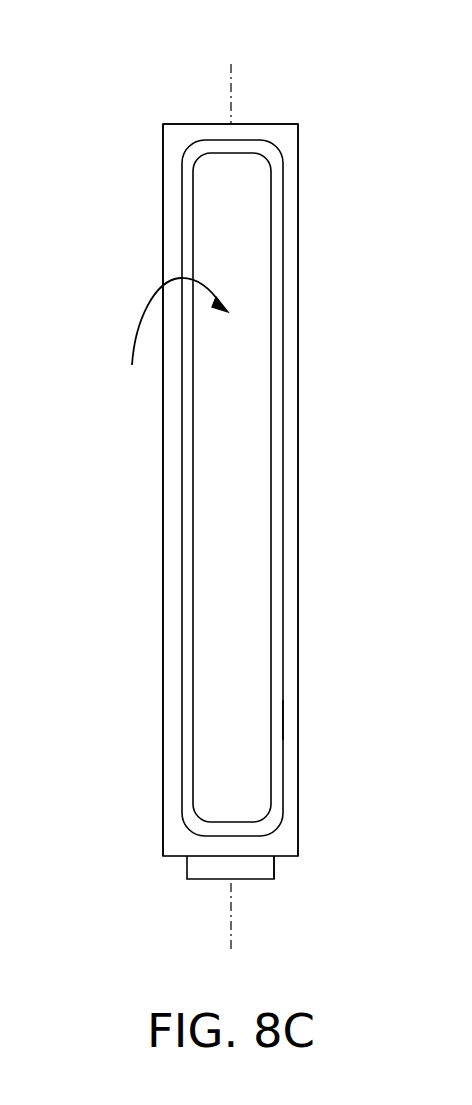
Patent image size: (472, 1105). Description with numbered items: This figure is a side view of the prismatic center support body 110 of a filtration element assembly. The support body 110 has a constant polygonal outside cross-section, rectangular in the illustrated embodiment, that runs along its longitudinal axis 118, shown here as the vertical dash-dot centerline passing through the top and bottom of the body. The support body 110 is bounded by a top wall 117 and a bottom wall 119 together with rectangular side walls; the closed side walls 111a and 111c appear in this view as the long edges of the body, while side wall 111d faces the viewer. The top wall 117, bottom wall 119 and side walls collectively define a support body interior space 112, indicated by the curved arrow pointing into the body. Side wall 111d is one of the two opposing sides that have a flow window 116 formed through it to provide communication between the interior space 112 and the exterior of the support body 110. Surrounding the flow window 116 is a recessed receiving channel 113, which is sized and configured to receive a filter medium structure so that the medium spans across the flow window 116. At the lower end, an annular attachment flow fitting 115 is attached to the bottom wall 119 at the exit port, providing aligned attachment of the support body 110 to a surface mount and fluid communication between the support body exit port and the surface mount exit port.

The center support body 110 is at (164, 222).
The side wall 111a is at (298, 565).
The side wall 111c is at (164, 565).
The side wall 111d is at (290, 722).
The support body interior space 112 is at (173, 335).
The recessed receiving channel 113 is at (283, 265).
The annular attachment flow fitting 115 is at (187, 870).
The flow window 116 is at (271, 433).
The top wall 117 is at (188, 124).
The longitudinal axis 118 is at (232, 95).
The bottom wall 119 is at (270, 858).